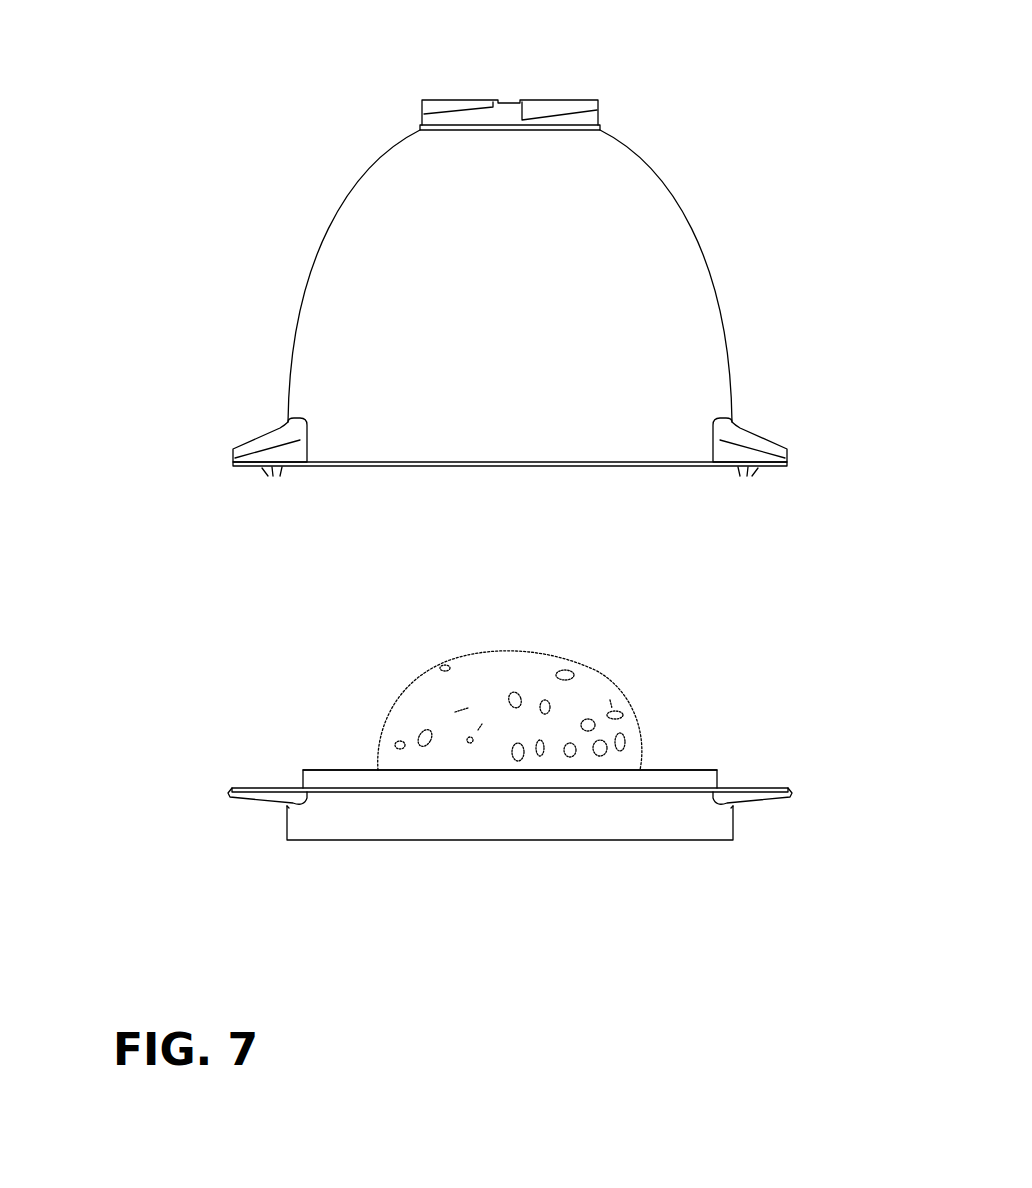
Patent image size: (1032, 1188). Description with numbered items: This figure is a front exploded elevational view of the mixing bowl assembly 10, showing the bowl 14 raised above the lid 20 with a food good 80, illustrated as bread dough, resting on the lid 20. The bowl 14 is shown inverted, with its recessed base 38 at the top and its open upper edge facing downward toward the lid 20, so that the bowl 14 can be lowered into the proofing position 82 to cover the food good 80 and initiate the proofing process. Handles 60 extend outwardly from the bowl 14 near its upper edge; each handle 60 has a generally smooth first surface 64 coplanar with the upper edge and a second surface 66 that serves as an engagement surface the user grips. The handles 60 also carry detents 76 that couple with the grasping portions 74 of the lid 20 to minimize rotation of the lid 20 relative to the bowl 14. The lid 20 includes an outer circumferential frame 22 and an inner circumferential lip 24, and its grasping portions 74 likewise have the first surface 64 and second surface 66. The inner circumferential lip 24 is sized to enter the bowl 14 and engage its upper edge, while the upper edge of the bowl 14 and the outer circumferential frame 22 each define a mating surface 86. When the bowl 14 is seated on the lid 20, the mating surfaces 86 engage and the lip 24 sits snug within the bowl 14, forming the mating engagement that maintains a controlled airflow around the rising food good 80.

The mixing bowl assembly 10 is at (187, 320).
The bowl 14 is at (642, 215).
The base 38 is at (512, 108).
The second surface 66 is at (282, 432).
The handles 60 is at (263, 464).
The first surface 64 is at (268, 466).
The detents 76 is at (280, 466).
The mating surface 86 is at (410, 467).
The proofing position 82 is at (125, 618).
The food good 80 is at (578, 693).
The inner circumferential lip 24 is at (672, 768).
The grasping portions 74 is at (228, 800).
The lid 20 is at (348, 841).
The outer circumferential frame 22 is at (594, 822).